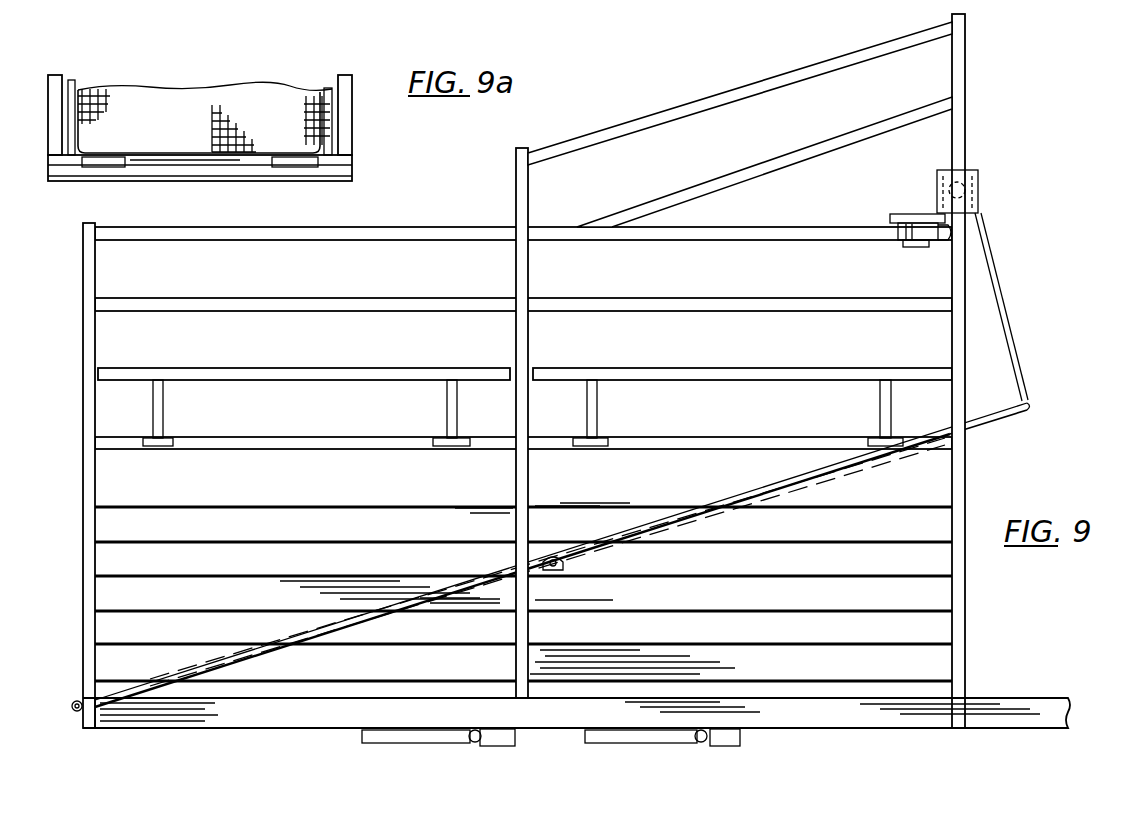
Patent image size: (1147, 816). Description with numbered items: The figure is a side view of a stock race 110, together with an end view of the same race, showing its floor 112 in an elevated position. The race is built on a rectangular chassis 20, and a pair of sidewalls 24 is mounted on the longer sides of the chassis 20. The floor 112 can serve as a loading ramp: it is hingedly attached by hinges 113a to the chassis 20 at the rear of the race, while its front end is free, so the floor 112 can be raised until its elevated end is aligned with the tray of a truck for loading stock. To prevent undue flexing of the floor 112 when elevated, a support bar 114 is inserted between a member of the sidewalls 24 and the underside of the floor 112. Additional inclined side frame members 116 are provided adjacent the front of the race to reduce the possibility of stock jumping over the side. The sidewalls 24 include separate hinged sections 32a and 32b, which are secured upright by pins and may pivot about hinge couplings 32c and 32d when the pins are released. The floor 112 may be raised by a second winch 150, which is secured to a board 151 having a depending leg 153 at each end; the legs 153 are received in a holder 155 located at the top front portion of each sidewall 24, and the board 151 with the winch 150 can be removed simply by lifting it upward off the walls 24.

In FIG. 9, the chassis 20 is at (882, 700).
In FIG. 9A, the sidewalls 24 is at (345, 82).
In FIG. 9, the sidewalls 24 is at (384, 295).
In FIG. 9, the hinged section 32a is at (288, 378).
In FIG. 9, the hinged section 32b is at (736, 376).
In FIG. 9, the hinge coupling 32c is at (158, 446).
In FIG. 9, the hinge coupling 32d is at (589, 446).
In FIG. 9, the stock race 110 is at (670, 98).
In FIG. 9A, the floor 112 is at (318, 118).
In FIG. 9, the floor 112 is at (745, 490).
In FIG. 9A, the hinges 113a is at (158, 165).
In FIG. 9, the hinges 113a is at (72, 704).
In FIG. 9, the support bar 114 is at (558, 572).
In FIG. 9, the inclined side frame members 116 is at (768, 76).
In FIG. 9, the second winch 150 is at (975, 196).
In FIG. 9, the board 151 is at (905, 214).
In FIG. 9, the depending leg 153 is at (905, 248).
In FIG. 9, the holder 155 is at (893, 236).